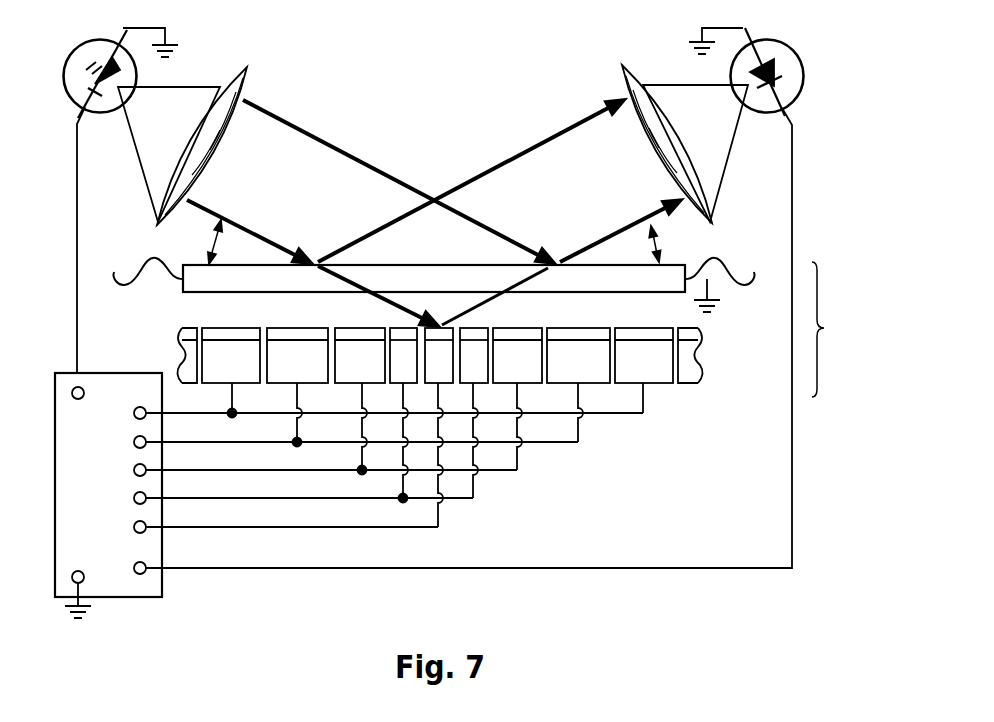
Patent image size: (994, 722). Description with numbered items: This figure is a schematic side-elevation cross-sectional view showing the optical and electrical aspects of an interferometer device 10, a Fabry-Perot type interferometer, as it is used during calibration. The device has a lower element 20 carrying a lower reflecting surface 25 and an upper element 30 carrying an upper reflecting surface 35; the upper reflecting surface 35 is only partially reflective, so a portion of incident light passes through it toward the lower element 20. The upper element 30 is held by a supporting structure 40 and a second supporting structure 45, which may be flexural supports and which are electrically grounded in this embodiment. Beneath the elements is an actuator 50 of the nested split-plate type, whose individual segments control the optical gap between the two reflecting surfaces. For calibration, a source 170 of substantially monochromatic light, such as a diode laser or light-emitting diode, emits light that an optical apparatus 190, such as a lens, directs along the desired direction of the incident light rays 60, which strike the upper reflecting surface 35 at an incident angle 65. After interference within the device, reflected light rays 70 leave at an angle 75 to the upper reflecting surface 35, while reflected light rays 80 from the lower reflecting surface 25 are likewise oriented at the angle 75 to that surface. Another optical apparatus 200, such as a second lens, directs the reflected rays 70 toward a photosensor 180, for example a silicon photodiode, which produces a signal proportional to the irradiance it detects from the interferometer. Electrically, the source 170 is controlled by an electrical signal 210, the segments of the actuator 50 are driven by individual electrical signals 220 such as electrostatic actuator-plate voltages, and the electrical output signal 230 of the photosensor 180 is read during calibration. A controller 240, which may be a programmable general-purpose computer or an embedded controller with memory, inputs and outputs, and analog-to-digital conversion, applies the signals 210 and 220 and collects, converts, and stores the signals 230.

The interferometer device 10 is at (833, 324).
The lower element 20 is at (237, 332).
The lower reflecting surface 25 is at (353, 332).
The upper element 30 is at (438, 280).
The upper reflecting surface 35 is at (472, 262).
The supporting structure 40 is at (147, 258).
The second supporting structure 45 is at (722, 260).
The actuator 50 is at (418, 341).
The incident light rays 60 is at (294, 128).
The incident angle 65 is at (213, 238).
The reflected light rays 70 is at (568, 127).
The angle 75 is at (658, 243).
The reflected light rays 80 is at (488, 303).
The source 170 is at (93, 40).
The photosensor 180 is at (770, 40).
The optical apparatus 190 is at (230, 150).
The optical apparatus 200 is at (634, 150).
The electrical signal 210 is at (65, 207).
The electrical signals 220 is at (122, 405).
The electrical output signal 230 is at (328, 570).
The controller 240 is at (120, 598).